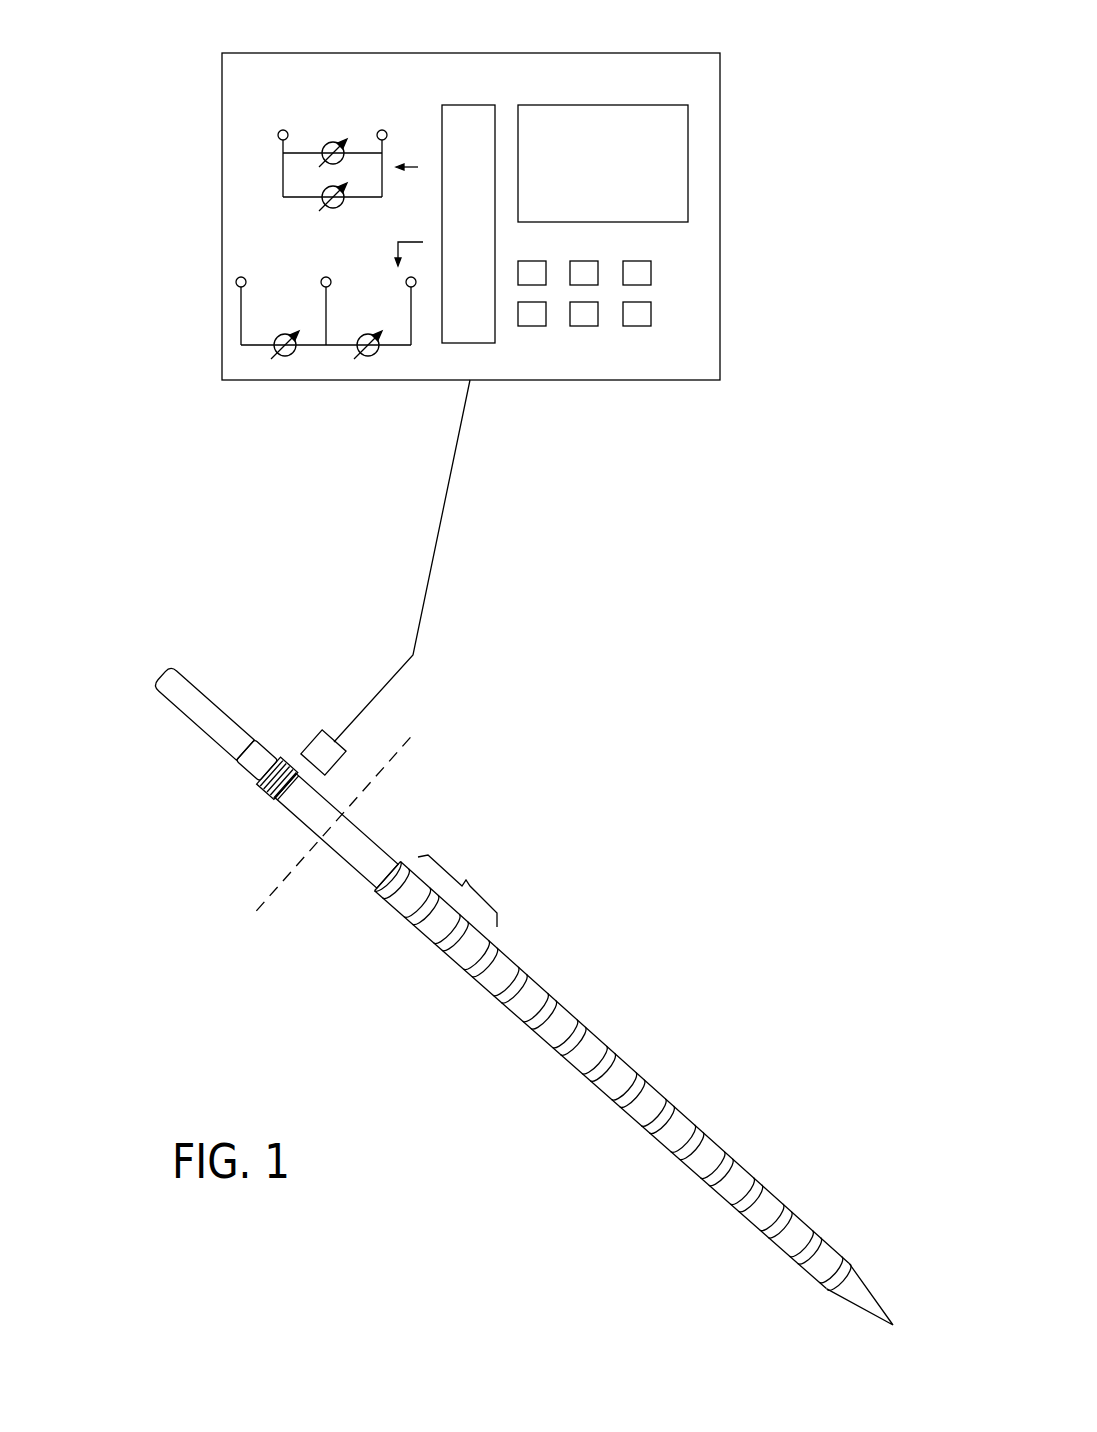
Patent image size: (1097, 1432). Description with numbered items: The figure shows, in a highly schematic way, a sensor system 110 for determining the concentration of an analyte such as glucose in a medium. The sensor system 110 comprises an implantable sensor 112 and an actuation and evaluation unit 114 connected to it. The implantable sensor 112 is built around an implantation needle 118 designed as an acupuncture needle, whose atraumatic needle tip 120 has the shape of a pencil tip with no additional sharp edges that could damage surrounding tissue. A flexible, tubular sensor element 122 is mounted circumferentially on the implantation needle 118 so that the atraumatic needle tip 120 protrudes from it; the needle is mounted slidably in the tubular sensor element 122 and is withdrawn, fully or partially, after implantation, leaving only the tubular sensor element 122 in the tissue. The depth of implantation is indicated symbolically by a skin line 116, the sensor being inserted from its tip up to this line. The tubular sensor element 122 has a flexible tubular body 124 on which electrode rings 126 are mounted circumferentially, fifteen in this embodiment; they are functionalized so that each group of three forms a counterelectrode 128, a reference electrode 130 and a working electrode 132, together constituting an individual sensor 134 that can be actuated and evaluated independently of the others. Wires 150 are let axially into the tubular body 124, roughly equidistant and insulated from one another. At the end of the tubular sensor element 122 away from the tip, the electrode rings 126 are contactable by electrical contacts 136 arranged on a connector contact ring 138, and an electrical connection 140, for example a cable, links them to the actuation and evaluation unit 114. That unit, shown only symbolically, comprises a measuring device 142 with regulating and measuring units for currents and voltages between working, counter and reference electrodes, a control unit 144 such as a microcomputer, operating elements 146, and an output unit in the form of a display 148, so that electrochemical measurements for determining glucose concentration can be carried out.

The sensor system 110 is at (633, 616).
The implantable sensor 112 is at (433, 1098).
The actuation and evaluation unit 114 is at (782, 55).
The skin line 116 is at (254, 909).
The implantation needle 118 is at (190, 707).
The atraumatic needle tip 120 is at (863, 1290).
The tubular sensor element 122 is at (649, 1037).
The tubular body 124 is at (367, 842).
The electrode rings 126 is at (697, 1165).
The counterelectrode 128 is at (395, 897).
The reference electrode 130 is at (415, 930).
The working electrode 132 is at (447, 948).
The individual sensor 134 is at (466, 880).
The electrical contacts 136 is at (275, 787).
The connector contact ring 138 is at (210, 789).
The electrical connection 140 is at (458, 437).
The measuring device 142 is at (245, 234).
The control unit 144 is at (466, 105).
The operating elements 146 is at (680, 293).
The display 148 is at (706, 155).
The wires 150 is at (282, 797).